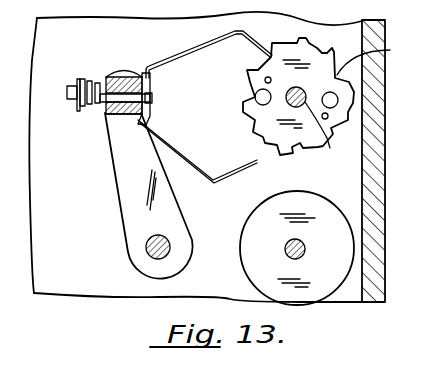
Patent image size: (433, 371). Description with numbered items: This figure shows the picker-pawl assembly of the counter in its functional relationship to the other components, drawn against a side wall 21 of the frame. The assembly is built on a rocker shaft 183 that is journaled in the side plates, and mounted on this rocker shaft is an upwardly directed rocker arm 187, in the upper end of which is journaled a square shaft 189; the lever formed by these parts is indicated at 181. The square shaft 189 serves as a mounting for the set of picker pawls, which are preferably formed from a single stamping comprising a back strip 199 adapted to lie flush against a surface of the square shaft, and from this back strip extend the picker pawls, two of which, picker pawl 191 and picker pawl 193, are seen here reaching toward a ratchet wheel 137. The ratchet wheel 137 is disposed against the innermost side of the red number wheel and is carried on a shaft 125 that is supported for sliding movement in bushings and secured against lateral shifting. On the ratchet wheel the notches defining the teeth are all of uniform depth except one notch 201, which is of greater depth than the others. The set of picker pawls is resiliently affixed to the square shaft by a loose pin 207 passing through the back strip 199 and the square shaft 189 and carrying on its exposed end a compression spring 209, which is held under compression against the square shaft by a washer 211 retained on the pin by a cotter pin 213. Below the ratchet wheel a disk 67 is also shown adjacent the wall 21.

The frame wall 21 is at (387, 133).
The roller disc 67 is at (306, 249).
The shaft 125 is at (358, 151).
The ratchet wheel 137 is at (302, 55).
The lever 181 is at (97, 148).
The rocker shaft 183 is at (146, 248).
The rocker arm 187 is at (128, 188).
The square shaft 189 is at (122, 115).
The picker pawl 191 is at (202, 49).
The picker pawl 193 is at (214, 170).
The back strip 199 is at (151, 86).
The notch of greater depth 201 is at (377, 59).
The loose pin 207 is at (133, 67).
The compression spring 209 is at (95, 85).
The washer 211 is at (75, 100).
The cotter pin 213 is at (77, 86).